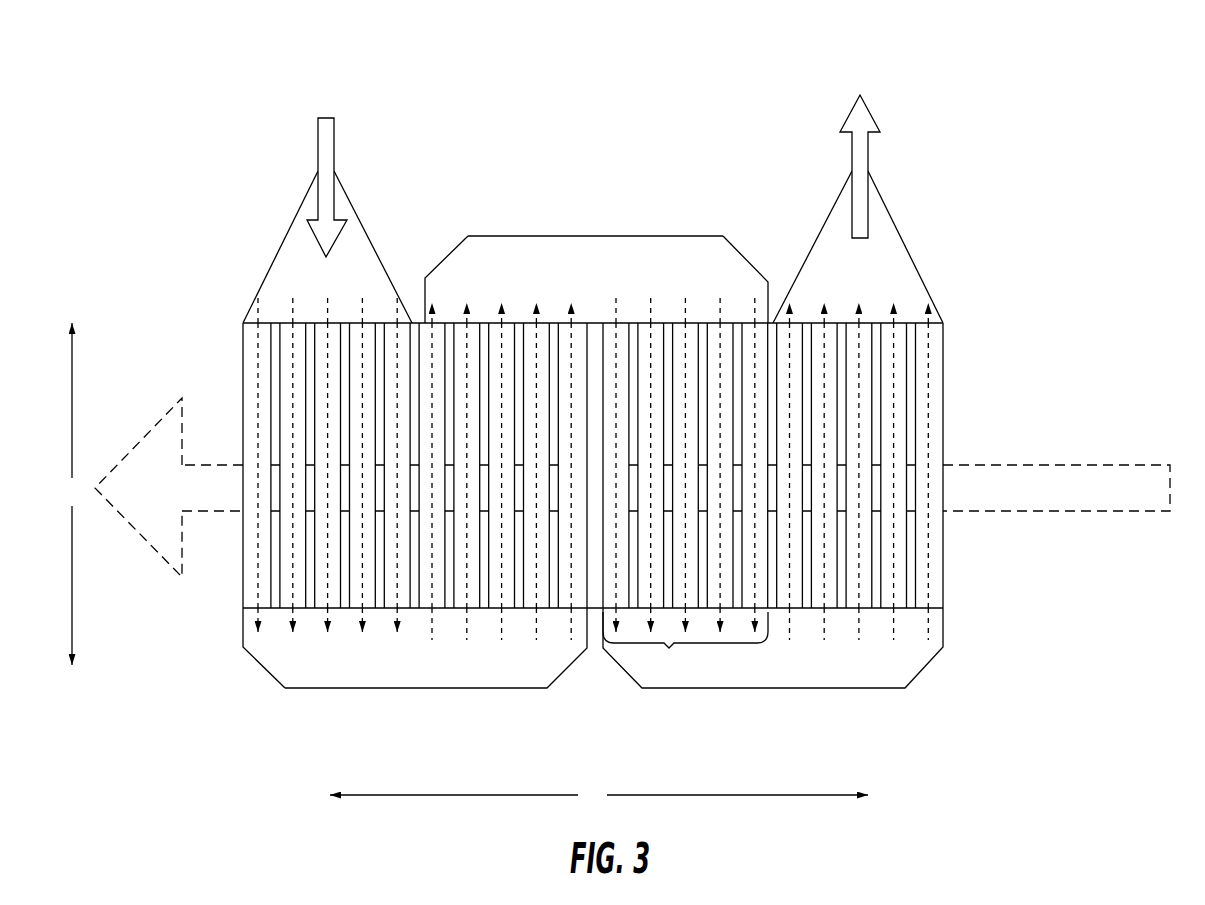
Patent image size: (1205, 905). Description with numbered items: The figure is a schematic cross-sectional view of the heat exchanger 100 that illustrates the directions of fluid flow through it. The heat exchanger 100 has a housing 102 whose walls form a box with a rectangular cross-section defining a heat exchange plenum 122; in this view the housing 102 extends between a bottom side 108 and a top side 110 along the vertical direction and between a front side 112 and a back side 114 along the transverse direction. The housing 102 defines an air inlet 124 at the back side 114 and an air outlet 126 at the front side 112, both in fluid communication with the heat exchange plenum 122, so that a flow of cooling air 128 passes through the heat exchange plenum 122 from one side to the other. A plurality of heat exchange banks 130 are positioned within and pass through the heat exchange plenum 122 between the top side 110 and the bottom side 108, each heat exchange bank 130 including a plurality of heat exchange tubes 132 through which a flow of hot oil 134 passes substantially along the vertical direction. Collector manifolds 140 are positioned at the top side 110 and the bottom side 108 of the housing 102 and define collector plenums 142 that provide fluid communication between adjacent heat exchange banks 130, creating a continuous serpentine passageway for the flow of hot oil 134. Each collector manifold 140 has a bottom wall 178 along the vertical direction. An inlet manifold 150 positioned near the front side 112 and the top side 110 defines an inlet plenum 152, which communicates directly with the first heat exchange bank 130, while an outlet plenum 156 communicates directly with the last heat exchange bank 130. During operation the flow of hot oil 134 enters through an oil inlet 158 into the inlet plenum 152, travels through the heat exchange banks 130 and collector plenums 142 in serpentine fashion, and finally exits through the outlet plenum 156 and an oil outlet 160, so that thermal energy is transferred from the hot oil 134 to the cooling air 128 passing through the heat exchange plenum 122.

The heat exchanger 100 is at (208, 86).
The housing 102 is at (652, 236).
The bottom side 108 is at (730, 682).
The top side 110 is at (715, 230).
The front side 112 is at (240, 333).
The back side 114 is at (945, 602).
The heat exchange plenum 122 is at (342, 438).
The air inlet 124 is at (945, 410).
The air outlet 126 is at (240, 598).
The flow of cooling air 128 is at (975, 465).
The heat exchange bank 130 is at (669, 648).
The heat exchange tube 132 is at (243, 548).
The flow of hot oil 134 is at (337, 118).
The collector manifold 140 is at (528, 236).
The collector plenum 142 is at (485, 260).
The inlet manifold 150 is at (282, 248).
The inlet plenum 152 is at (280, 292).
The outlet plenum 156 is at (902, 222).
The oil inlet 158 is at (318, 172).
The oil outlet 160 is at (852, 168).
The bottom wall 178 is at (607, 323).